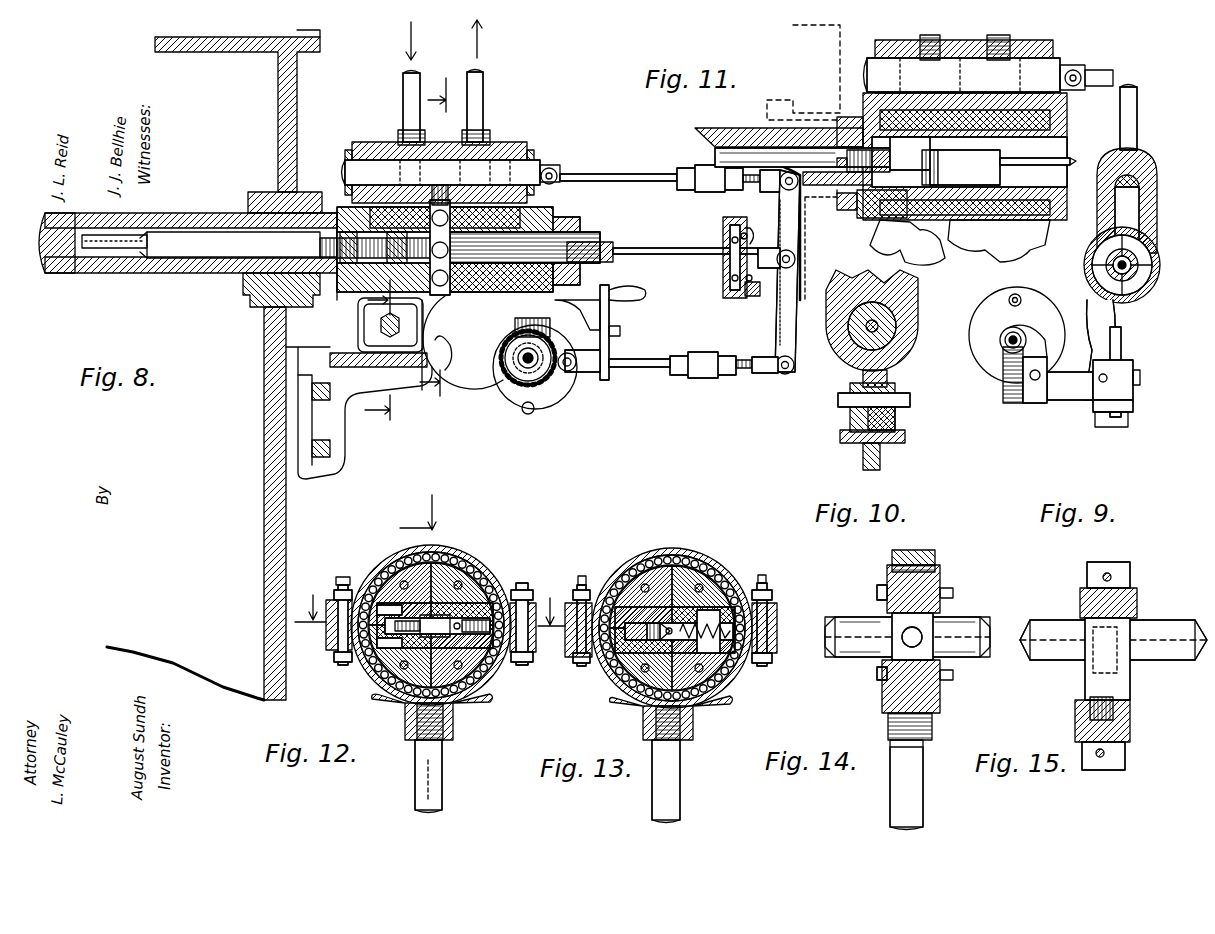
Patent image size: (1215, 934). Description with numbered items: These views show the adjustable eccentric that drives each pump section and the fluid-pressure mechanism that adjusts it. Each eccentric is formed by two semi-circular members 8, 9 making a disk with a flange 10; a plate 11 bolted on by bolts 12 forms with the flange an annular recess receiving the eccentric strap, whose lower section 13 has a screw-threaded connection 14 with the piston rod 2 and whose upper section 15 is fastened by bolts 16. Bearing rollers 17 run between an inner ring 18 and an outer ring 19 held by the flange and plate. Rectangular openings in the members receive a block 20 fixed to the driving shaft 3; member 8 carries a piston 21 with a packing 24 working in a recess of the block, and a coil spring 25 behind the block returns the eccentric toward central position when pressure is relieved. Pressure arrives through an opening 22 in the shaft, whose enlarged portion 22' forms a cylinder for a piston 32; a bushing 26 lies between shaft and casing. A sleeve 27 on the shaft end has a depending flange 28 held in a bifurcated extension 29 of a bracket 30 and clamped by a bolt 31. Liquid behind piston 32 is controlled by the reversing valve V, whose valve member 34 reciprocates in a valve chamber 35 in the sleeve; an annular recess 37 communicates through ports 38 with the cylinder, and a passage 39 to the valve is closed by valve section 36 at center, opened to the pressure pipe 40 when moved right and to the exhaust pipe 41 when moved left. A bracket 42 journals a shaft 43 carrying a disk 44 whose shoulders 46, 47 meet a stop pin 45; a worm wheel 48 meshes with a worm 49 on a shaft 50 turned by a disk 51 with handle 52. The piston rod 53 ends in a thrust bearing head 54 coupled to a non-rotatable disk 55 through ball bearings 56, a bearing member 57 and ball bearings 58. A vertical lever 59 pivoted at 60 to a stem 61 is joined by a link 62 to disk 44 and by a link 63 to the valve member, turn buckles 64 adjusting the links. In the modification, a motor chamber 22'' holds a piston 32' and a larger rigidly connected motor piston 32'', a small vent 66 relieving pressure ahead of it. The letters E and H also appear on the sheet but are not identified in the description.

In FIG. 12, the piston rod 2 is at (418, 795).
In FIG. 13, the piston rod 2 is at (655, 803).
In FIG. 14, the piston rod 2 is at (895, 795).
In FIG. 8, the driving shaft 3 is at (92, 288).
In FIG. 14, the driving shaft 3 is at (850, 652).
In FIG. 15, the driving shaft 3 is at (1050, 657).
In FIG. 12, the semi-circular member 8 is at (375, 672).
In FIG. 13, the semi-circular member 8 is at (634, 695).
In FIG. 8, the semi-circular member 9 is at (429, 247).
In FIG. 12, the semi-circular member 9 is at (500, 585).
In FIG. 13, the semi-circular member 9 is at (705, 575).
In FIG. 8, the flange 10 is at (378, 356).
In FIG. 14, the flange 10 is at (890, 558).
In FIG. 15, the flange 10 is at (1085, 589).
In FIG. 14, the plate 11 is at (945, 580).
In FIG. 12, the bolts 12 is at (470, 565).
In FIG. 13, the bolts 12 is at (735, 598).
In FIG. 14, the bolts 12 is at (880, 588).
In FIG. 13, the lower section of eccentric strap 13 is at (742, 684).
In FIG. 12, the screw-threaded connection 14 is at (418, 776).
In FIG. 13, the screw-threaded connection 14 is at (690, 738).
In FIG. 12, the upper section of eccentric strap 15 is at (430, 620).
In FIG. 13, the upper section of eccentric strap 15 is at (665, 556).
In FIG. 13, the bolts 16 is at (590, 590).
In FIG. 15, the bolts 16 is at (1112, 578).
In FIG. 12, the bearing rollers 17 is at (440, 558).
In FIG. 13, the bearing rollers 17 is at (732, 580).
In FIG. 14, the bearing rollers 17 is at (940, 562).
In FIG. 12, the inner ring 18 is at (382, 568).
In FIG. 13, the inner ring 18 is at (616, 586).
In FIG. 14, the inner ring 18 is at (890, 578).
In FIG. 12, the outer ring 19 is at (406, 557).
In FIG. 13, the outer ring 19 is at (632, 565).
In FIG. 14, the outer ring 19 is at (916, 553).
In FIG. 13, the arm or block 20 is at (600, 665).
In FIG. 14, the arm or block 20 is at (935, 622).
In FIG. 15, the arm or block 20 is at (1130, 683).
In FIG. 13, the cylindrical projection or piston 21 is at (572, 652).
In FIG. 15, the cylindrical projection or piston 21 is at (1115, 710).
In FIG. 8, the opening 22 is at (281, 260).
In FIG. 12, the opening 22 is at (459, 586).
In FIG. 14, the opening 22 is at (809, 640).
In FIG. 15, the opening 22 is at (1199, 622).
In FIG. 8, the enlarged portion 22' is at (230, 219).
In FIG. 11, the enlarged portion 22' is at (857, 143).
In FIG. 11, the motor chamber 22'' is at (999, 230).
In FIG. 12, the packing 24 is at (352, 652).
In FIG. 13, the packing 24 is at (620, 668).
In FIG. 12, the coil spring 25 is at (498, 680).
In FIG. 13, the coil spring 25 is at (716, 680).
In FIG. 8, the bushing 26 is at (245, 286).
In FIG. 8, the sleeve 27 is at (480, 340).
In FIG. 9, the sleeve 27 is at (1088, 290).
In FIG. 10, the sleeve 27 is at (850, 342).
In FIG. 8, the depending flange 28 is at (360, 302).
In FIG. 10, the depending flange 28 is at (888, 377).
In FIG. 8, the bifurcated extension 29 is at (490, 364).
In FIG. 10, the bifurcated extension 29 is at (848, 418).
In FIG. 8, the bracket 30 is at (325, 428).
In FIG. 10, the bracket 30 is at (838, 402).
In FIG. 10, the bolt 31 is at (900, 420).
In FIG. 8, the piston 32 is at (278, 273).
In FIG. 11, the piston 32' is at (881, 188).
In FIG. 11, the motor piston 32'' is at (901, 227).
In FIG. 8, the valve member 34 is at (525, 170).
In FIG. 8, the valve chamber 35 is at (402, 142).
In FIG. 8, the valve section 36 is at (442, 160).
In FIG. 9, the valve section 36 is at (1145, 178).
In FIG. 8, the annular recess 37 is at (460, 296).
In FIG. 9, the annular recess 37 is at (1150, 265).
In FIG. 8, the ports 38 is at (577, 202).
In FIG. 9, the ports 38 is at (1150, 252).
In FIG. 8, the passage 39 is at (528, 192).
In FIG. 9, the passage 39 is at (1148, 217).
In FIG. 8, the pressure pipe 40 is at (410, 88).
In FIG. 11, the pressure pipe 40 is at (880, 56).
In FIG. 8, the exhaust pipe 41 is at (480, 102).
In FIG. 11, the exhaust pipe 41 is at (1045, 58).
In FIG. 9, the exhaust pipe 41 is at (1138, 120).
In FIG. 8, the bracket 42 is at (555, 306).
In FIG. 9, the bracket 42 is at (1086, 300).
In FIG. 8, the shaft 43 is at (520, 375).
In FIG. 9, the shaft 43 is at (1008, 372).
In FIG. 8, the disk 44 is at (565, 388).
In FIG. 9, the disk 44 is at (1133, 386).
In FIG. 8, the stop pin 45 is at (526, 412).
In FIG. 9, the stop pin 45 is at (1130, 416).
In FIG. 8, the shoulder 46 is at (520, 330).
In FIG. 9, the shoulder 46 is at (1125, 336).
In FIG. 8, the shoulder 47 is at (532, 410).
In FIG. 9, the shoulder 47 is at (1118, 428).
In FIG. 8, the worm wheel 48 is at (505, 365).
In FIG. 9, the worm wheel 48 is at (1015, 405).
In FIG. 8, the worm 49 is at (535, 325).
In FIG. 9, the worm 49 is at (1008, 335).
In FIG. 8, the shaft 50 is at (622, 332).
In FIG. 9, the shaft 50 is at (1005, 342).
In FIG. 8, the disk 51 is at (610, 315).
In FIG. 9, the disk 51 is at (984, 320).
In FIG. 8, the handle 52 is at (655, 293).
In FIG. 9, the handle 52 is at (1010, 298).
In FIG. 8, the piston rod 53 is at (645, 250).
In FIG. 11, the piston rod 53 is at (1070, 160).
In FIG. 8, the thrust bearing head 54 is at (733, 270).
In FIG. 8, the non-rotatable disk 55 is at (748, 230).
In FIG. 8, the ball bearings 56 is at (724, 243).
In FIG. 8, the annular flange or bearing member 57 is at (745, 296).
In FIG. 8, the ball bearings 58 is at (752, 284).
In FIG. 8, the vertical lever 59 is at (806, 268).
In FIG. 8, the pivot 60 is at (797, 258).
In FIG. 8, the stem 61 is at (781, 242).
In FIG. 8, the link 62 is at (652, 368).
In FIG. 8, the link 63 is at (634, 176).
In FIG. 11, the link 63 is at (1110, 78).
In FIG. 8, the turn buckles 64 is at (705, 174).
In FIG. 8, the small vent 66 is at (850, 212).
In FIG. 12, the section line E is at (345, 523).
In FIG. 13, the section line E is at (637, 523).
In FIG. 8, the wall H is at (264, 506).
In FIG. 8, the reversing valve V is at (512, 142).
In FIG. 11, the reversing valve V is at (1096, 51).